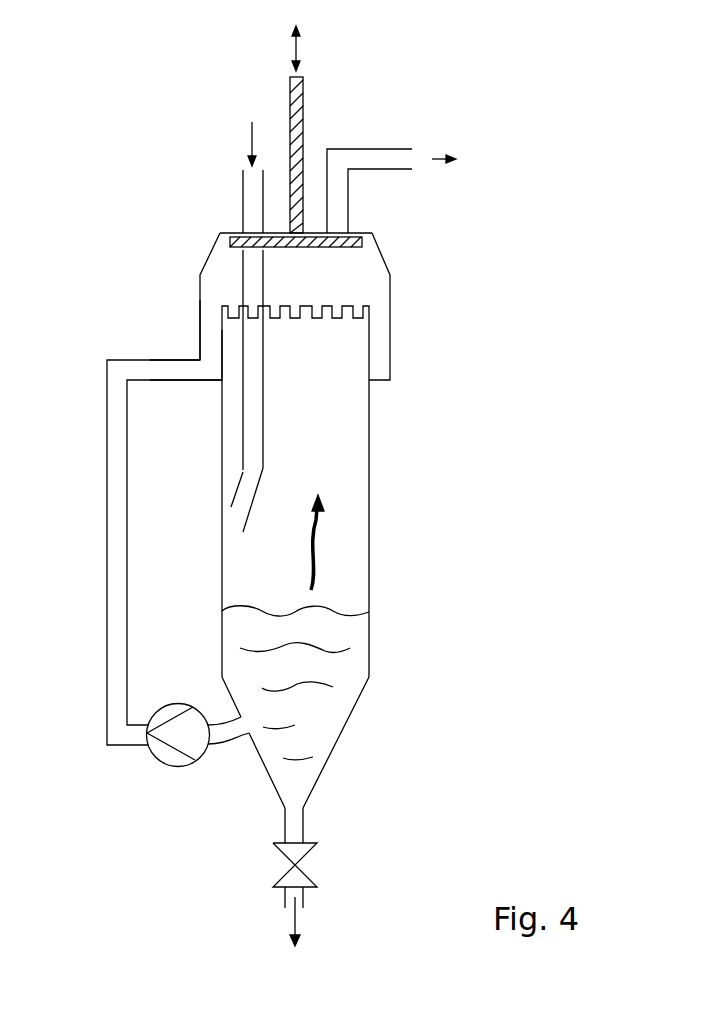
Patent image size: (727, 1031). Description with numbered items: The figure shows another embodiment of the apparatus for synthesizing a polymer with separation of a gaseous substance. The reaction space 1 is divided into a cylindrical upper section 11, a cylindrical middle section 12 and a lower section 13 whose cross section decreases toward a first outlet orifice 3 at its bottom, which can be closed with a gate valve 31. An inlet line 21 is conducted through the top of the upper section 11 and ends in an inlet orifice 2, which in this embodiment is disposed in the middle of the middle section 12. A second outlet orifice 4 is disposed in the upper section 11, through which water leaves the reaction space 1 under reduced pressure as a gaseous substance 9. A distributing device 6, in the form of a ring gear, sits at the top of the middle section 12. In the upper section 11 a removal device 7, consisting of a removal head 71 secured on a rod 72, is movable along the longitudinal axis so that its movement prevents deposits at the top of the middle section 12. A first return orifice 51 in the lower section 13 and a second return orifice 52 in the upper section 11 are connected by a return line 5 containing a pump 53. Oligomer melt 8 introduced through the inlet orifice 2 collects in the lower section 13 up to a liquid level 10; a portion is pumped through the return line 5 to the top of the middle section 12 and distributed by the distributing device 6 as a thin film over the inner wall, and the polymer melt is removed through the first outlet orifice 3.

The reaction space 1 is at (311, 480).
The inlet orifice 2 is at (233, 508).
The first outlet orifice 3 is at (290, 822).
The gate valve 31 is at (305, 872).
The second outlet orifice 4 is at (337, 225).
The return line 5 is at (117, 654).
The first return orifice 51 is at (230, 734).
The second return orifice 52 is at (212, 367).
The pump 53 is at (167, 753).
The distributing device 6 is at (335, 317).
The removal device 7 is at (303, 115).
The removal head 71 is at (375, 248).
The rod 72 is at (303, 78).
The oligomer melt 8 is at (333, 652).
The gaseous substance 9 is at (323, 530).
The liquid level 10 is at (369, 613).
The upper section 11 is at (333, 137).
The middle section 12 is at (350, 580).
The lower section 13 is at (338, 712).
The inlet line 21 is at (252, 222).